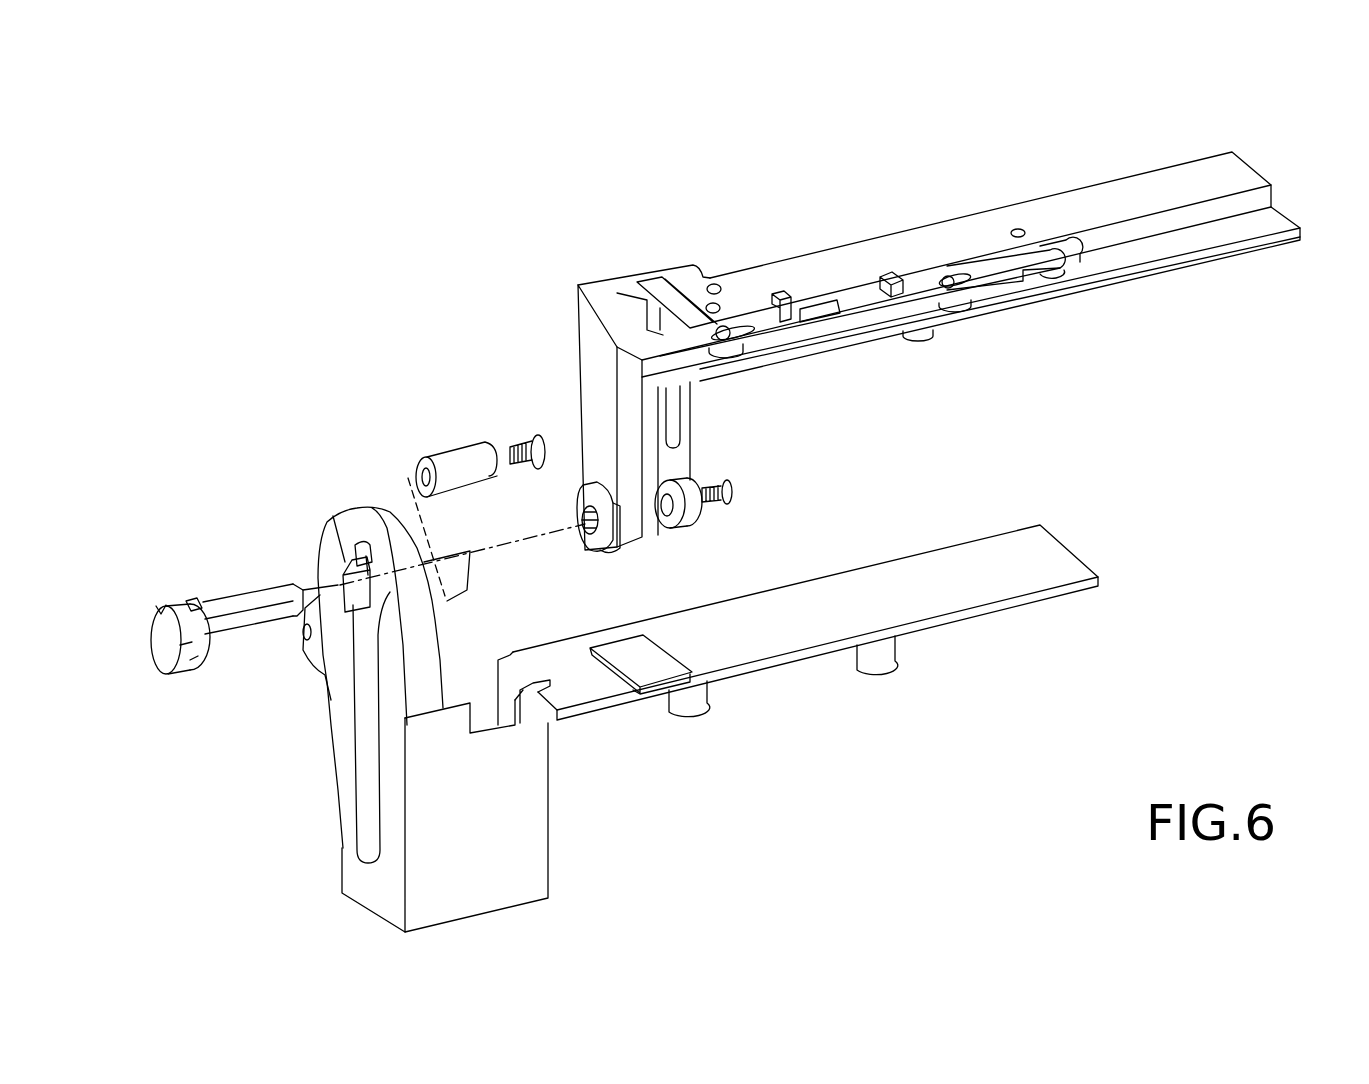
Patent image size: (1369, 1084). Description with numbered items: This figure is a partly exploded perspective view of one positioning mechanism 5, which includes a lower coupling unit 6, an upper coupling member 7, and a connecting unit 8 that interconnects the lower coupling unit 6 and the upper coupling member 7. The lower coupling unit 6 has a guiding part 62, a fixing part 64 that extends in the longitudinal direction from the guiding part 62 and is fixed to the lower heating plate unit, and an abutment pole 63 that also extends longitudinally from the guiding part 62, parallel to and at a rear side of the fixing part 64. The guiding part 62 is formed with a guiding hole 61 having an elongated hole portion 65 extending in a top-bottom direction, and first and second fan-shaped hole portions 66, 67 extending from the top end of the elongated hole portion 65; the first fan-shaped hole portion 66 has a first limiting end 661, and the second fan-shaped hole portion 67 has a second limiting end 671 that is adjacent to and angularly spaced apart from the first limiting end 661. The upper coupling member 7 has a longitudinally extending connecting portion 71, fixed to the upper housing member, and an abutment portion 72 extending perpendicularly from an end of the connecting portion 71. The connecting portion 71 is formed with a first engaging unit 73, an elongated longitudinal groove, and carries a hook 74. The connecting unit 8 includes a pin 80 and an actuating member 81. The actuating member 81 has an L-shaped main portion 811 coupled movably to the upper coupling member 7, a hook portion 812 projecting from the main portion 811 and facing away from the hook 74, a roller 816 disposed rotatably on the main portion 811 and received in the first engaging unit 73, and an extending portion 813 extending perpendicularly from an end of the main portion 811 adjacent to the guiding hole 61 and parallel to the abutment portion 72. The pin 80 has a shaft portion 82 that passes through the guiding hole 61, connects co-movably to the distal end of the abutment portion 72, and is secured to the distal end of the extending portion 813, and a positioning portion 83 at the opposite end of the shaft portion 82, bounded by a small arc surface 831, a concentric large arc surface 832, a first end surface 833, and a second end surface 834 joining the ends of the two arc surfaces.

The positioning mechanism 5 is at (440, 327).
The lower coupling unit 6 is at (952, 650).
The guiding hole 61 is at (385, 783).
The guiding part 62 is at (375, 887).
The abutment pole 63 is at (458, 463).
The fixing part 64 is at (775, 630).
The elongated hole portion 65 is at (365, 730).
The first fan-shaped hole portion 66 is at (379, 540).
The first limiting end 661 is at (367, 547).
The second fan-shaped hole portion 67 is at (340, 650).
The second limiting end 671 is at (345, 608).
The upper coupling member 7 is at (1108, 162).
The connecting portion 71 is at (1236, 178).
The abutment portion 72 is at (600, 417).
The first engaging unit 73 is at (1075, 262).
The hook 74 is at (903, 268).
The connecting unit 8 is at (667, 543).
The pin 80 is at (252, 592).
The actuating member 81 is at (797, 348).
The L-shaped main portion 811 is at (998, 275).
The hook portion 812 is at (779, 294).
The extending portion 813 is at (677, 467).
The roller 816 is at (1053, 273).
The shaft portion 82 is at (223, 623).
The positioning portion 83 is at (172, 633).
The small arc surface 831 is at (187, 603).
The large arc surface 832 is at (195, 668).
The first end surface 833 is at (170, 648).
The second end surface 834 is at (160, 612).